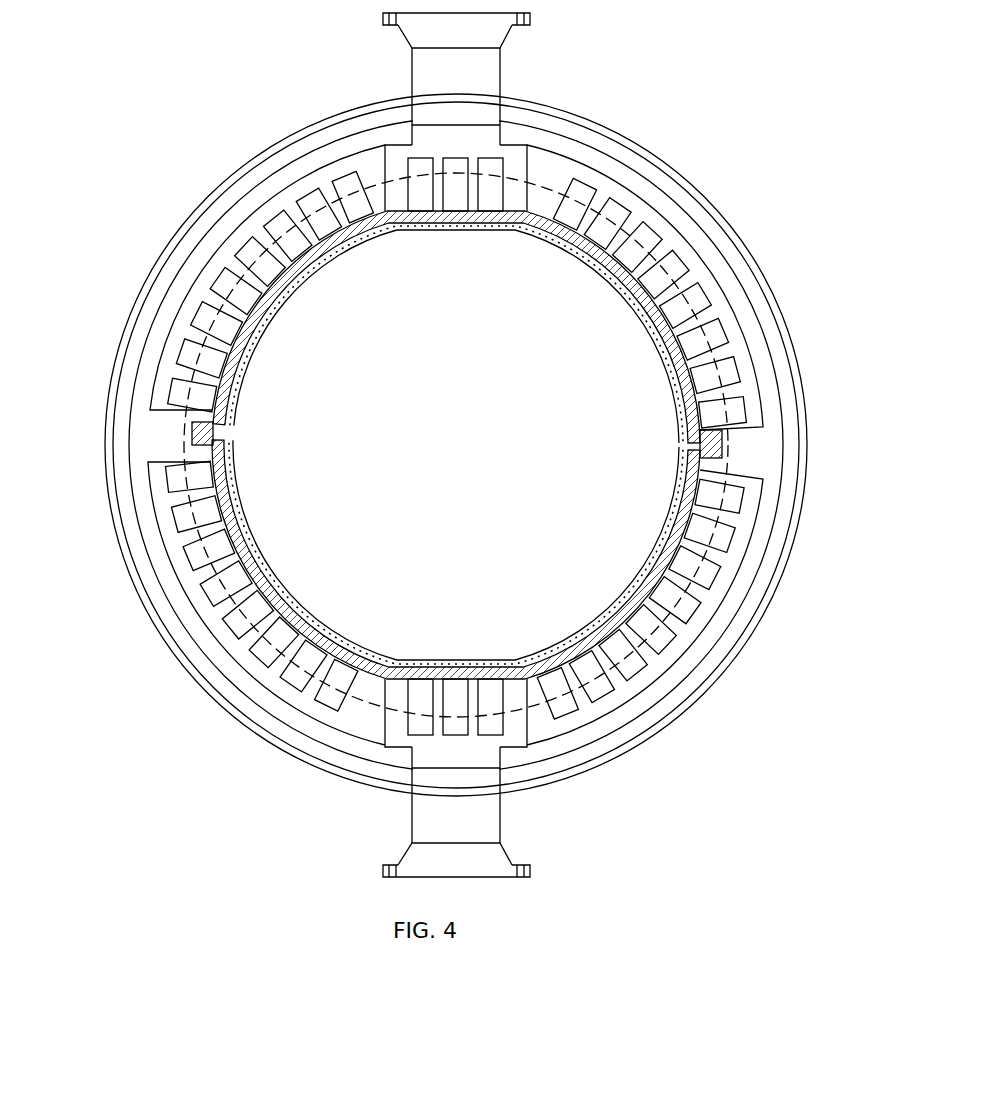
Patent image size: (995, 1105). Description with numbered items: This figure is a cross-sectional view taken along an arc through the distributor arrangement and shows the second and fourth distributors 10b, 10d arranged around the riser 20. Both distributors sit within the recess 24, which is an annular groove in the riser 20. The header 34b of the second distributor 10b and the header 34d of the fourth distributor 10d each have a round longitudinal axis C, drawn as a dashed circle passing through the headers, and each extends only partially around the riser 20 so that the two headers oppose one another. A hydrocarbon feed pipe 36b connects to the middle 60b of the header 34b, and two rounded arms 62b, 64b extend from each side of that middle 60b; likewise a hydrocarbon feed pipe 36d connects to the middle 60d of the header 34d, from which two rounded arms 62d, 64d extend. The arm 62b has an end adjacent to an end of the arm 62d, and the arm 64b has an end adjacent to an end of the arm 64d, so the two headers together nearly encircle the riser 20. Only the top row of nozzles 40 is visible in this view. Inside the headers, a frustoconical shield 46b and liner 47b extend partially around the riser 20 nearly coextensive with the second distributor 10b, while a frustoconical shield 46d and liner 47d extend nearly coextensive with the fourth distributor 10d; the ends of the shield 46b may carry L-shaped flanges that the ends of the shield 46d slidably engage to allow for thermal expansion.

The second distributor 10b is at (688, 132).
The fourth distributor 10d is at (655, 775).
The riser 20 is at (782, 318).
The recess 24 is at (297, 172).
The header 34b is at (429, 287).
The header 34d is at (434, 637).
The hydrocarbon feed pipe 36b is at (415, 71).
The hydrocarbon feed pipe 36d is at (492, 823).
The nozzles 40 is at (237, 362).
The frustoconical shield 46b is at (385, 228).
The frustoconical shield 46d is at (310, 637).
The liner 47b is at (322, 262).
The liner 47d is at (253, 547).
The middle 60b is at (390, 155).
The middle 60d is at (393, 687).
The rounded arm 62b is at (147, 405).
The rounded arm 62d is at (178, 543).
The rounded arm 64b is at (712, 293).
The rounded arm 64d is at (708, 600).
The longitudinal axis C is at (243, 262).